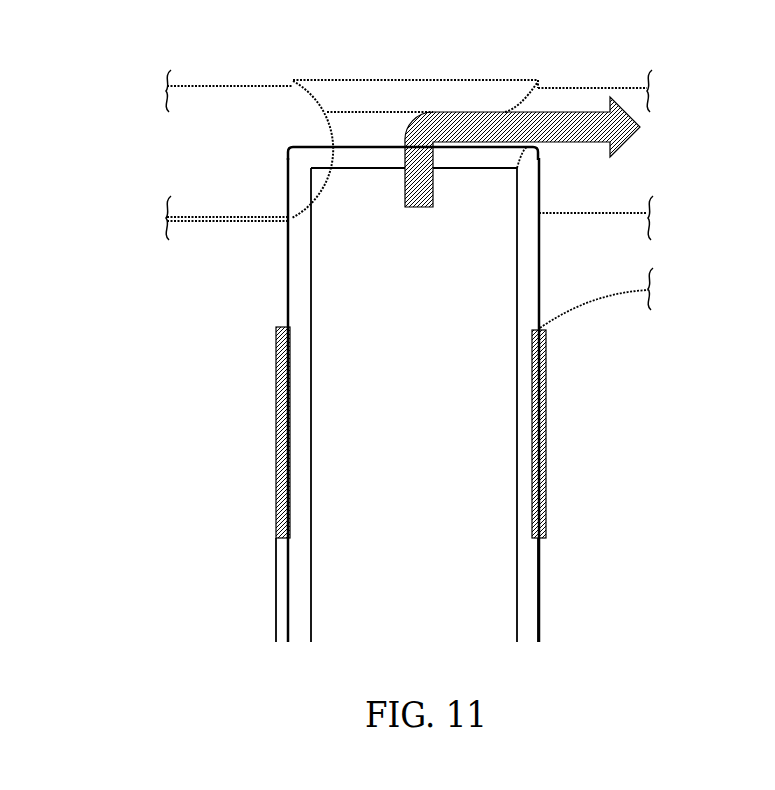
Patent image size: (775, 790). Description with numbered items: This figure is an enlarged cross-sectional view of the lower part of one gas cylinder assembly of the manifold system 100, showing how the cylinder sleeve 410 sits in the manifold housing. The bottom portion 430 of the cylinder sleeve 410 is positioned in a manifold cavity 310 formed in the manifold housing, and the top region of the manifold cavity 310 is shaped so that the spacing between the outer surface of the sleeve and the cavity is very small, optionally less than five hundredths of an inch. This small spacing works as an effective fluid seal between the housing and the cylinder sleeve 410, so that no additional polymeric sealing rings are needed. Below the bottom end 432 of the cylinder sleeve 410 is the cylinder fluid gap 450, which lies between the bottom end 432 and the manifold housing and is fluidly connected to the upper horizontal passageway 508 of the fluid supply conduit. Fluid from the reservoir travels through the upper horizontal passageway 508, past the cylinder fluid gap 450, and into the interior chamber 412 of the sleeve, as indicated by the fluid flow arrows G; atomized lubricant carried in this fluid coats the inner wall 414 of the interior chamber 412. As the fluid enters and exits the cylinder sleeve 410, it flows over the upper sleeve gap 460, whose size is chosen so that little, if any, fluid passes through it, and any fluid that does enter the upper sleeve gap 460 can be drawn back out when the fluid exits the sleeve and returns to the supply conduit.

The manifold system 100 is at (437, 34).
The manifold cavity 310 is at (283, 567).
The cylinder sleeve 410 is at (288, 272).
The interior chamber 412 is at (473, 465).
The inner wall 414 is at (515, 397).
The bottom portion 430 is at (528, 273).
The bottom end 432 is at (315, 147).
The cylinder fluid gap 450 is at (383, 130).
The upper sleeve gap 460 is at (288, 297).
The upper horizontal passageway 508 is at (215, 163).
The fluid flow arrows G is at (583, 130).